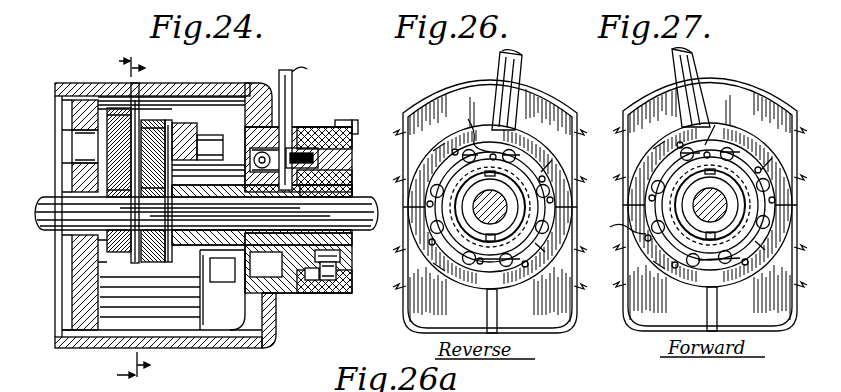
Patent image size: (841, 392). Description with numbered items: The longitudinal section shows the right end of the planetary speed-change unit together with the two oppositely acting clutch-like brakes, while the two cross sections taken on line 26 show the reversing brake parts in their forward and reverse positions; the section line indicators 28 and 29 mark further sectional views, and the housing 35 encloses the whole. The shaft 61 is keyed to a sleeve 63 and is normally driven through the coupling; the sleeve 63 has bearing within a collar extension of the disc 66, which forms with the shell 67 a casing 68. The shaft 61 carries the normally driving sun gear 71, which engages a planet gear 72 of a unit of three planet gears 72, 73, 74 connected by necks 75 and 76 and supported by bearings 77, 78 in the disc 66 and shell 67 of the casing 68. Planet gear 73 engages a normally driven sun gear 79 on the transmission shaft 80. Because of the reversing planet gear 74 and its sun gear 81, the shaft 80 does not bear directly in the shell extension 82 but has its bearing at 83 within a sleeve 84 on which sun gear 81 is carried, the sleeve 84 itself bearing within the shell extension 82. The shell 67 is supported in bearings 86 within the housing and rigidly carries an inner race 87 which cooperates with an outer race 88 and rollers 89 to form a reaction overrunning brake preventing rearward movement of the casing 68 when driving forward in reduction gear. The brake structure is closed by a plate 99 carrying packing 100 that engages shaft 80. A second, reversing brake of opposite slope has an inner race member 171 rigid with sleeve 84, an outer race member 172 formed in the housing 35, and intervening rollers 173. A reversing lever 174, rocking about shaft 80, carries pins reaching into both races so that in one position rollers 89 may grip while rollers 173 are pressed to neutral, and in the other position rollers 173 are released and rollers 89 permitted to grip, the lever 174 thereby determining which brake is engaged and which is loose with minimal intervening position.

In FIG. 24, the section line 26— 26 is at (325, 113).
In FIG. 24, the section line indicator 28 is at (116, 220).
In FIG. 24, the section line indicator 29 is at (154, 217).
In FIG. 24, the housing 35 is at (256, 348).
In FIG. 26, the housing 35 is at (490, 219).
In FIG. 27, the housing 35 is at (710, 219).
In FIG. 24, the shaft 61 is at (206, 213).
In FIG. 24, the sleeve 63 is at (62, 190).
In FIG. 24, the disc 66 is at (83, 272).
In FIG. 24, the shell 67 is at (172, 290).
In FIG. 24, the casing 68 is at (202, 331).
In FIG. 24, the sun gear 71 is at (118, 243).
In FIG. 24, the planet gear 72 is at (115, 110).
In FIG. 24, the planet gear 73 is at (162, 110).
In FIG. 24, the reversing planet gear 74 is at (217, 100).
In FIG. 24, the neck 75 is at (71, 113).
In FIG. 24, the neck 76 is at (187, 101).
In FIG. 24, the bearing 77 is at (86, 146).
In FIG. 24, the bearing 78 is at (208, 149).
In FIG. 24, the sun gear 79 is at (135, 249).
In FIG. 24, the transmission shaft 80 is at (355, 267).
In FIG. 26, the transmission shaft 80 is at (491, 228).
In FIG. 27, the transmission shaft 80 is at (706, 195).
In FIG. 24, the sun gear 81 is at (170, 253).
In FIG. 24, the shell extension 82 is at (270, 143).
In FIG. 24, the bearing 83 is at (343, 165).
In FIG. 26, the bearing 83 is at (489, 226).
In FIG. 27, the bearing 83 is at (710, 221).
In FIG. 26, the sleeve 84 is at (490, 199).
In FIG. 27, the sleeve 84 is at (710, 197).
In FIG. 24, the bearings 86 is at (298, 141).
In FIG. 24, the inner race 87 is at (315, 279).
In FIG. 24, the outer race 88 is at (333, 290).
In FIG. 24, the rollers 89 is at (350, 137).
In FIG. 26, the rollers 89 is at (520, 206).
In FIG. 27, the rollers 89 is at (722, 225).
In FIG. 24, the plate 99 is at (343, 257).
In FIG. 24, the packing 100 is at (347, 182).
In FIG. 24, the inner race member 171 is at (333, 152).
In FIG. 24, the outer race member 172 is at (343, 127).
In FIG. 24, the rollers 173 is at (383, 127).
In FIG. 26, the rollers 173 is at (466, 214).
In FIG. 27, the rollers 173 is at (677, 170).
In FIG. 26, the reversing lever 174 is at (530, 89).
In FIG. 27, the reversing lever 174 is at (711, 87).